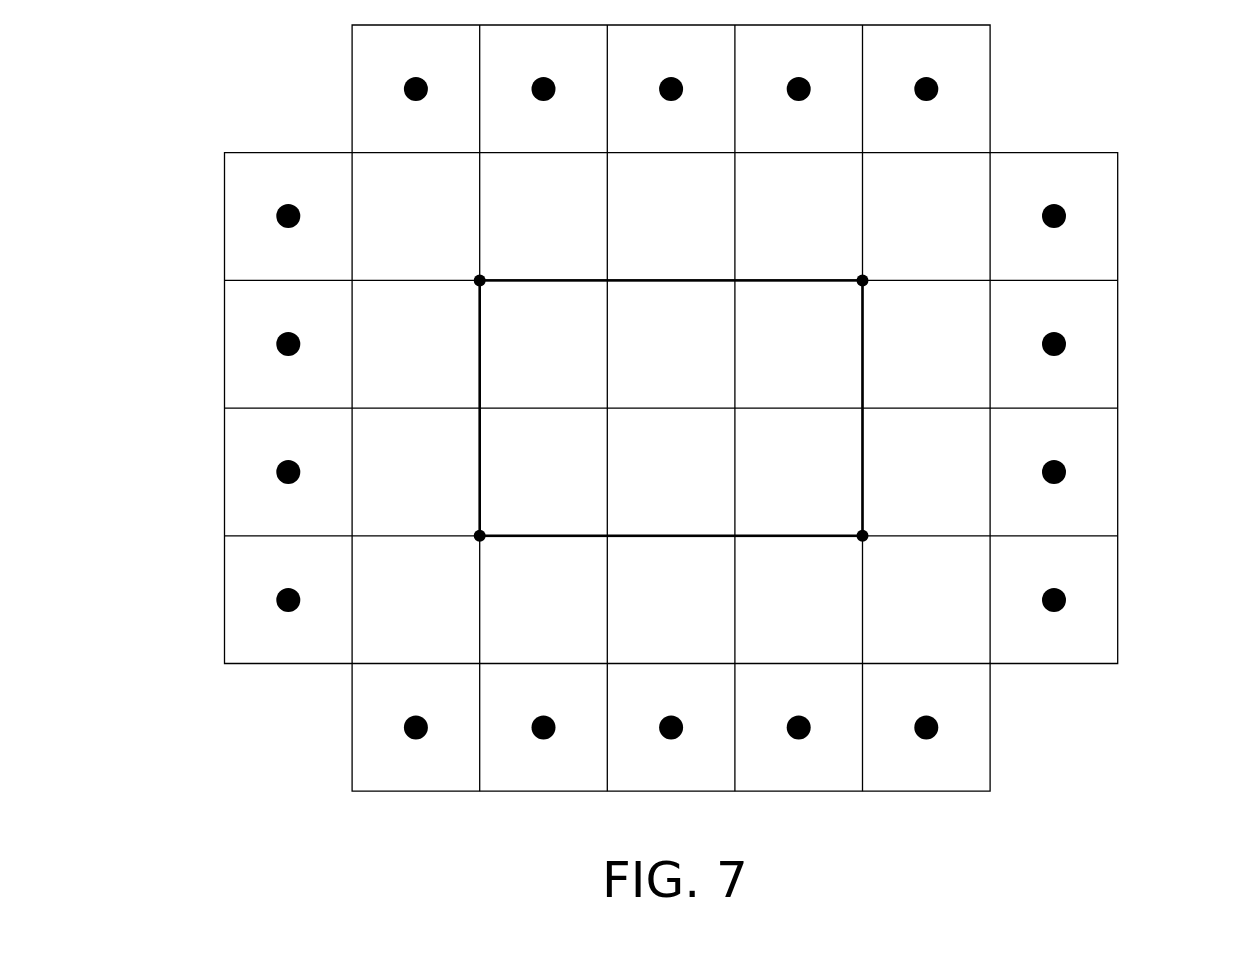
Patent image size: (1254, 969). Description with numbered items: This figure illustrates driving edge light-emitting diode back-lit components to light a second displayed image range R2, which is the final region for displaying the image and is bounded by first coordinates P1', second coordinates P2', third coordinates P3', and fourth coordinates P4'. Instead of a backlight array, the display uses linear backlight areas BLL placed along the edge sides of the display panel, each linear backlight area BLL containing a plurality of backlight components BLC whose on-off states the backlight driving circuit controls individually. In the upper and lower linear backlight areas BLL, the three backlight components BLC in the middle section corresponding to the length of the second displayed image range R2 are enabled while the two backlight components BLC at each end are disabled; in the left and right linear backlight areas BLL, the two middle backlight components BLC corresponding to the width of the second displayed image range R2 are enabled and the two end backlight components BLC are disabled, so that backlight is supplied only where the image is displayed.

The linear backlight area BLL is at (1118, 316).
The backlight component BLC is at (1066, 597).
The second displayed image range R2 is at (478, 345).
The first coordinates P1' is at (463, 268).
The second coordinates P2' is at (883, 552).
The third coordinates P3' is at (883, 268).
The fourth coordinates P4' is at (463, 552).